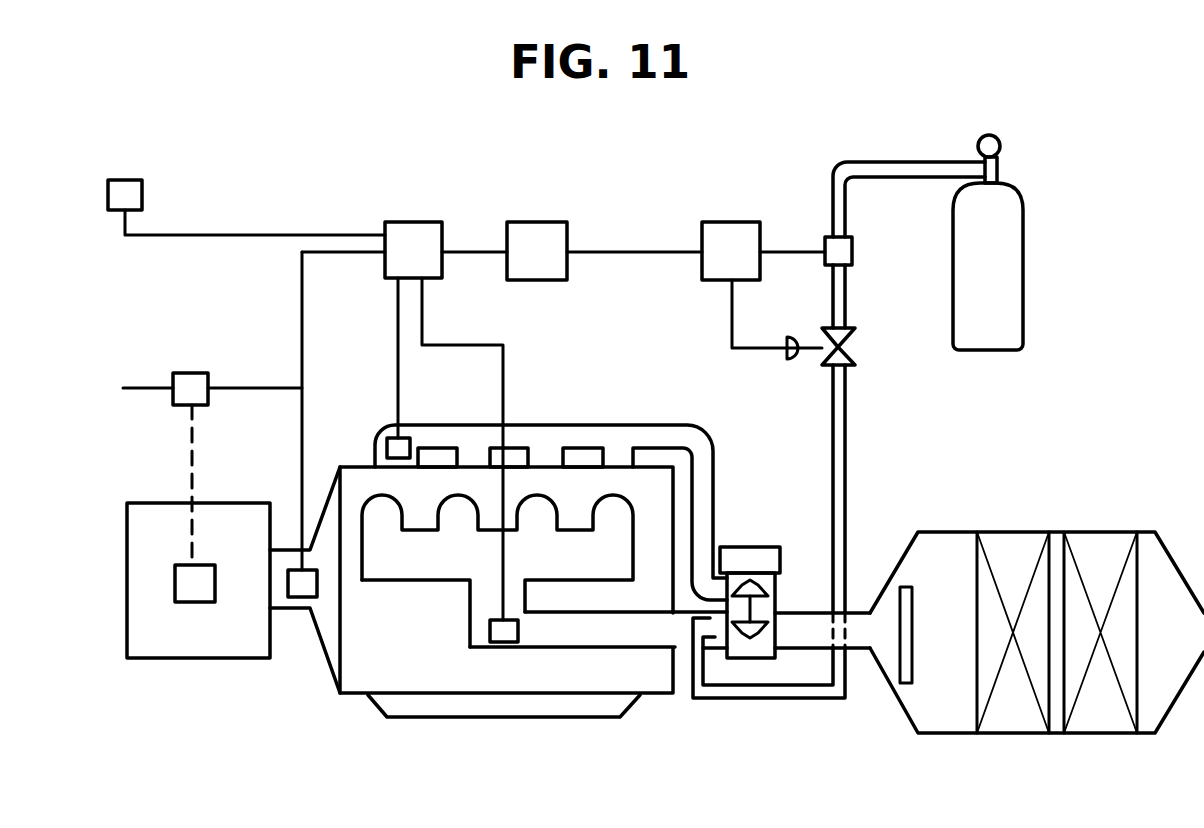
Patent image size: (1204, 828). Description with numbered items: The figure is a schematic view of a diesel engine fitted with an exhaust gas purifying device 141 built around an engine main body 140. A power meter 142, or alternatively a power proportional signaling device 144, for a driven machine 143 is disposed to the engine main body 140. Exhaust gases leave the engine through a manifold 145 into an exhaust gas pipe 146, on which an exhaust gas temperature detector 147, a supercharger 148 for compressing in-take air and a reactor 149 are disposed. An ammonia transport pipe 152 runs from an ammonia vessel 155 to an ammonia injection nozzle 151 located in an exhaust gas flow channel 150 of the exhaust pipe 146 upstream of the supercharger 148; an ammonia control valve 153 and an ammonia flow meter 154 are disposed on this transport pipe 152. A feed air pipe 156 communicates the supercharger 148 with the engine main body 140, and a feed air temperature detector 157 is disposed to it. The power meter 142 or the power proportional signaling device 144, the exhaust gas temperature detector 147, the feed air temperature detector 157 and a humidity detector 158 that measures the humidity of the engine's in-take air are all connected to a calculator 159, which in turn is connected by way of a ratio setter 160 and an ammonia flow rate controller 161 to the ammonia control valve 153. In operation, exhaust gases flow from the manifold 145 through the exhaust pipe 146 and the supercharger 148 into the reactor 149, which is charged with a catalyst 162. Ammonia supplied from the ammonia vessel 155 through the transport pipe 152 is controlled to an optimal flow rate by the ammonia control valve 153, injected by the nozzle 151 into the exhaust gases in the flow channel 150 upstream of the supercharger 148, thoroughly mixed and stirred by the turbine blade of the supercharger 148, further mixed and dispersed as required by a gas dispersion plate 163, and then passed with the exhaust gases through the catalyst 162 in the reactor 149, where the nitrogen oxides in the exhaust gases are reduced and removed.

The engine main body 140 is at (345, 695).
The exhaust gas purifying device 141 is at (637, 240).
The power meter 142 is at (301, 597).
The driven machine 143 is at (192, 602).
The power proportional signaling device 144 is at (192, 373).
The manifold 145 is at (545, 495).
The exhaust gas pipe 146 is at (563, 648).
The exhaust gas temperature detector 147 is at (500, 642).
The supercharger 148 is at (750, 547).
The reactor 149 is at (1098, 532).
The exhaust gas flow channel 150 is at (682, 637).
The ammonia injection nozzle 151 is at (707, 625).
The ammonia transport pipe 152 is at (845, 455).
The ammonia control valve 153 is at (855, 358).
The ammonia flow meter 154 is at (852, 250).
The ammonia vessel 155 is at (1023, 278).
The feed air pipe 156 is at (688, 425).
The feed air temperature detector 157 is at (387, 450).
The humidity detector 158 is at (125, 180).
The calculator 159 is at (412, 222).
The ratio setter 160 is at (537, 222).
The ammonia flow rate controller 161 is at (732, 222).
The catalyst 162 is at (1008, 557).
The gas dispersion plate 163 is at (912, 665).